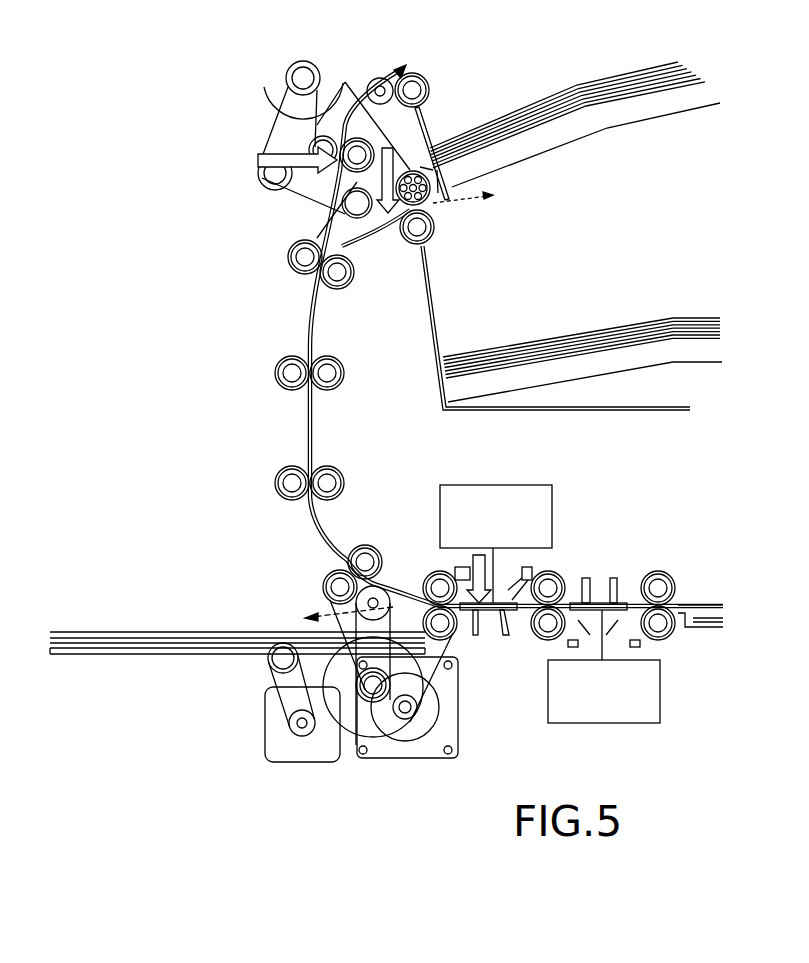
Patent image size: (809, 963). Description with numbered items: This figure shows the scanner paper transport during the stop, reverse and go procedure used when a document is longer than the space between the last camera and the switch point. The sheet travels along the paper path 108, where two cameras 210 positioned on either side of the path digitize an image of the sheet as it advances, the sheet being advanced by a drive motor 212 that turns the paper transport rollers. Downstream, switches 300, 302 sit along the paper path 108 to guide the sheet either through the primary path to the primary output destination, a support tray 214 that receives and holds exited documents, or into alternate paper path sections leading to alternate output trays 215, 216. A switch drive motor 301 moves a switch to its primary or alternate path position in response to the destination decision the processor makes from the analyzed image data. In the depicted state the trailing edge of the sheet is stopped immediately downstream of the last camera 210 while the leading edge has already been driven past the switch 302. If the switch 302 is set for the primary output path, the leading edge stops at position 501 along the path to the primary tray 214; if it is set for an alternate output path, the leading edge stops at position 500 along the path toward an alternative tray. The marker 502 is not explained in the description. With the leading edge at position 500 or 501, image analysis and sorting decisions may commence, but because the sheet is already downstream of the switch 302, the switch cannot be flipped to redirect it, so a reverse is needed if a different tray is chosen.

The paper path 108 is at (346, 428).
The camera 210 is at (553, 490).
The drive motor 212 is at (407, 748).
The primary output destination tray 214 is at (710, 358).
The alternate output tray 215 is at (68, 657).
The alternate output tray 216 is at (697, 102).
The switch 300 is at (448, 653).
The switch drive motor 301 is at (263, 735).
The switch 302 is at (265, 140).
The leading edge stop position 500 is at (257, 158).
The leading edge stop position 501 is at (392, 160).
The direction arrow 502 is at (482, 567).